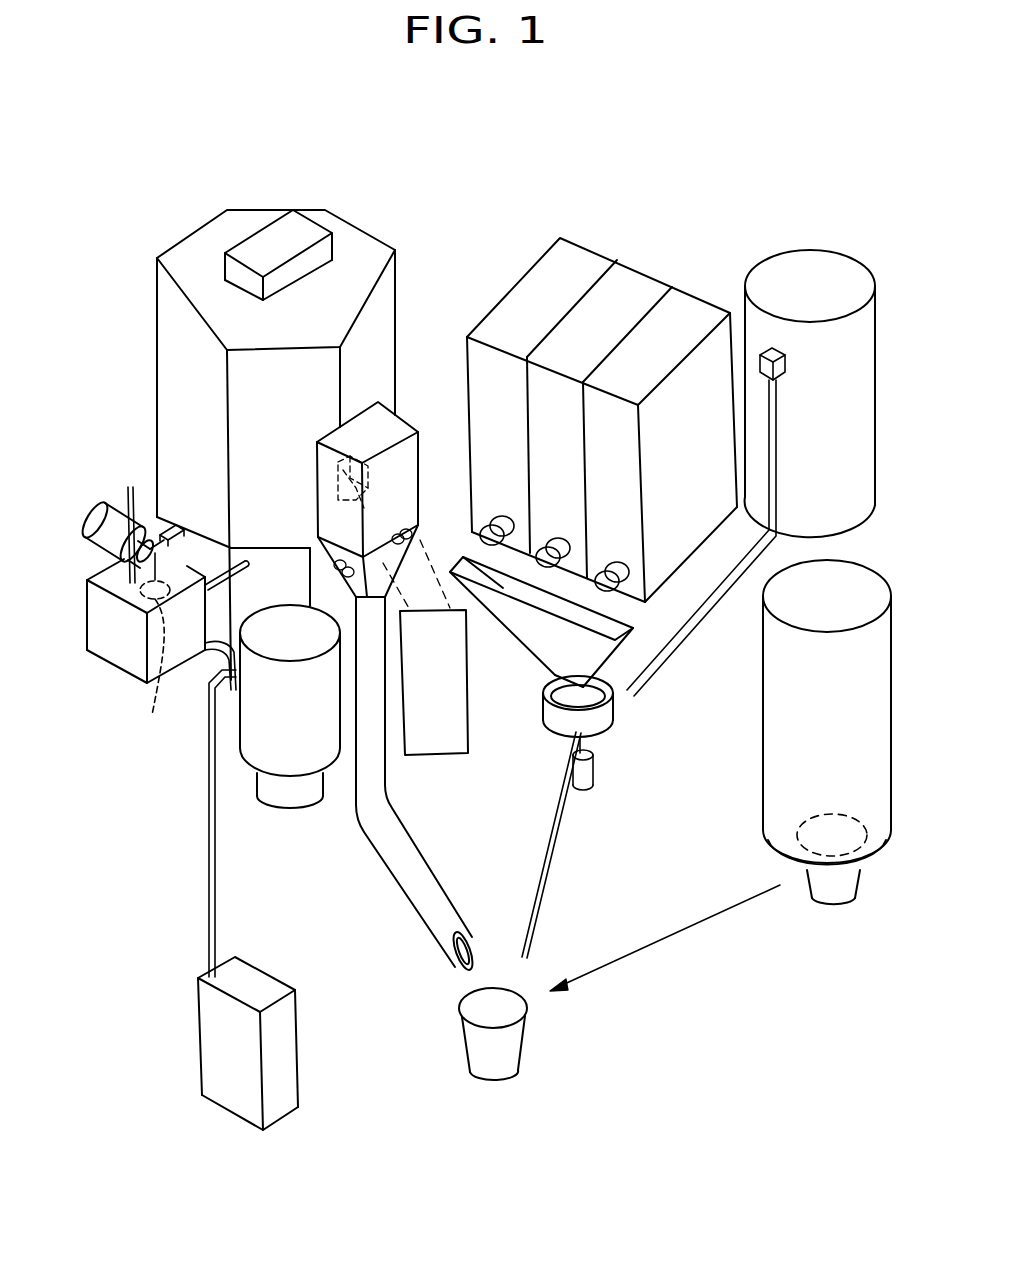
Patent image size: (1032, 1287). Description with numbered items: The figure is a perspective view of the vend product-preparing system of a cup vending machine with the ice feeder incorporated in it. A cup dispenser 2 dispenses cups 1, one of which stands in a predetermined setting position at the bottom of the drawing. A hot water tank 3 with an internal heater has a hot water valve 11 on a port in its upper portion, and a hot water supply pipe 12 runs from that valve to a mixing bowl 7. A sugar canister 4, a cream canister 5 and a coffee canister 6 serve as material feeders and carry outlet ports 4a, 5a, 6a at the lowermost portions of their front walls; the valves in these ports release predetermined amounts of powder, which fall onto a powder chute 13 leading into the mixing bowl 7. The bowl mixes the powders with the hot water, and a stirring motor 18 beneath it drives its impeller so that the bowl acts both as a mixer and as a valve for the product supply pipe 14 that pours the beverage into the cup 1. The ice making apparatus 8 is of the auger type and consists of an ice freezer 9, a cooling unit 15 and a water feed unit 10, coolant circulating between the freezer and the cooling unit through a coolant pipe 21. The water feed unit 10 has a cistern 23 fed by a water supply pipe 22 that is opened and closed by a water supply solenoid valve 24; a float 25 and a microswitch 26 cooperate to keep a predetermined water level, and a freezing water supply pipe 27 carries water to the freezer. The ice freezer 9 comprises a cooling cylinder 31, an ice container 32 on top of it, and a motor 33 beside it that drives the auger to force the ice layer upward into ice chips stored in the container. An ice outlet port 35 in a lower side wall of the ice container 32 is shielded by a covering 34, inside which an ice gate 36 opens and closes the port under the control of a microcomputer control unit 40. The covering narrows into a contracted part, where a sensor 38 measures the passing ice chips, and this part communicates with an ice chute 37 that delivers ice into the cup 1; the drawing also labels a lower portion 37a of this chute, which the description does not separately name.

The cup 1 is at (522, 1042).
The cup dispenser 2 is at (875, 845).
The hot water tank 3 is at (813, 402).
The sugar canister 4 is at (602, 389).
The cream canister 5 is at (650, 278).
The coffee canister 6 is at (712, 304).
The outlet port 4a is at (495, 520).
The outlet port 5a is at (557, 542).
The outlet port 6a is at (612, 566).
The mixing bowl 7 is at (604, 745).
The ice making apparatus 8 is at (258, 398).
The ice freezer 9 is at (368, 213).
The water feed unit 10 is at (122, 574).
The hot water valve 11 is at (786, 358).
The hot water supply pipe 12 is at (672, 645).
The powder chute 13 is at (498, 622).
The product supply pipe 14 is at (560, 856).
The cooling unit 15 is at (287, 1077).
The stirring motor 18 is at (596, 777).
The coolant pipe 21 is at (208, 905).
The water supply pipe 22 is at (130, 484).
The cistern 23 is at (97, 657).
The water supply solenoid valve 24 is at (100, 505).
The float 25 is at (154, 710).
The microswitch 26 is at (172, 523).
The freezing water supply pipe 27 is at (242, 572).
The cooling cylinder 31 is at (210, 660).
The ice container 32 is at (260, 209).
The motor 33 is at (262, 758).
The covering 34 is at (355, 466).
The ice outlet port 35 is at (363, 452).
The ice gate 36 is at (342, 470).
The ice chute 37 is at (382, 784).
The bent portion of ice chute 37a is at (356, 806).
The sensor 38 is at (410, 520).
The control unit 40 is at (470, 740).